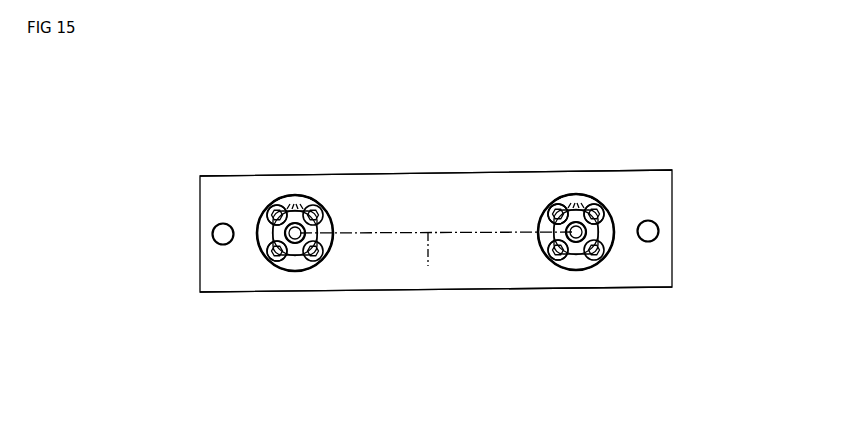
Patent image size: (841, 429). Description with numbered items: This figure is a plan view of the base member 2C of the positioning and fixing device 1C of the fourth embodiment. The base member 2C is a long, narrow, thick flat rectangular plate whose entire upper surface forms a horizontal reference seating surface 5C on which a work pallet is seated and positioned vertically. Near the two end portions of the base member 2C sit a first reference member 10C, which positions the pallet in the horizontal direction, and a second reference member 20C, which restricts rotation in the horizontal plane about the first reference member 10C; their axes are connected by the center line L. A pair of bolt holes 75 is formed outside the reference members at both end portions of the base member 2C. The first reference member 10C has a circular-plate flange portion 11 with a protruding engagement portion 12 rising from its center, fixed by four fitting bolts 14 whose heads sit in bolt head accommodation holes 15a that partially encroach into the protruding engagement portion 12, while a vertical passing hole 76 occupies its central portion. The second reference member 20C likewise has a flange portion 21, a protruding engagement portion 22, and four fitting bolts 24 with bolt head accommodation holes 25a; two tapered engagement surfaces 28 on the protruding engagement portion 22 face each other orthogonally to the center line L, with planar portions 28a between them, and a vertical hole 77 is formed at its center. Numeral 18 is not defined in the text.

The positioning and fixing device 1C is at (420, 110).
The base member 2C is at (430, 170).
The reference seating surface 5C is at (372, 286).
The first reference member 10C is at (325, 190).
The flange portion 11 is at (258, 247).
The protruding engagement portion 12 is at (283, 206).
The fitting bolt 14 is at (266, 207).
The bolt head accommodation hole 15a is at (277, 263).
The flange ring 18 is at (295, 203).
The vertical passing hole 76 is at (294, 248).
The second reference member 20C is at (606, 190).
The flange portion 21 is at (542, 238).
The protruding engagement portion 22 is at (581, 205).
The fitting bolt 24 is at (608, 253).
The bolt head accommodation hole 25a is at (563, 200).
The tapered engagement surface 28 is at (567, 260).
The planar portion 28a is at (549, 206).
The vertical hole 77 is at (576, 248).
The bolt hole 75 is at (221, 233).
The center line L is at (436, 258).